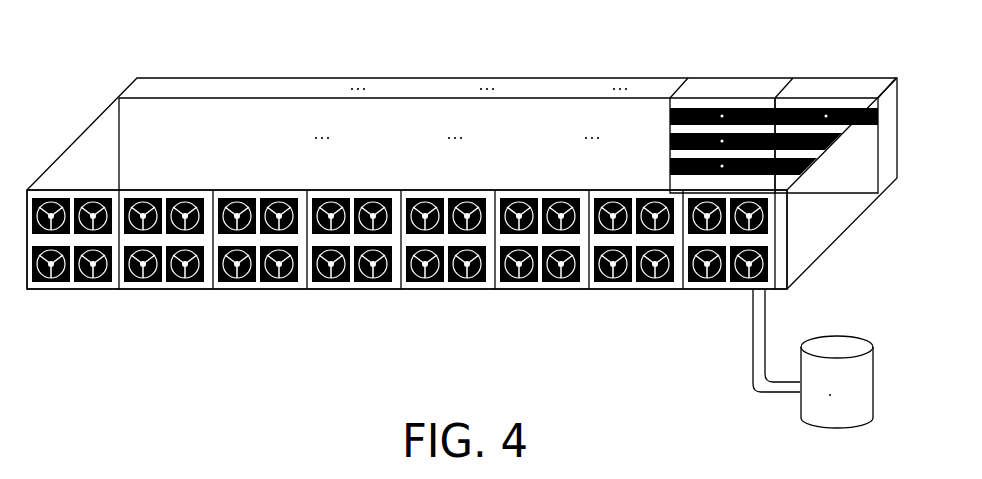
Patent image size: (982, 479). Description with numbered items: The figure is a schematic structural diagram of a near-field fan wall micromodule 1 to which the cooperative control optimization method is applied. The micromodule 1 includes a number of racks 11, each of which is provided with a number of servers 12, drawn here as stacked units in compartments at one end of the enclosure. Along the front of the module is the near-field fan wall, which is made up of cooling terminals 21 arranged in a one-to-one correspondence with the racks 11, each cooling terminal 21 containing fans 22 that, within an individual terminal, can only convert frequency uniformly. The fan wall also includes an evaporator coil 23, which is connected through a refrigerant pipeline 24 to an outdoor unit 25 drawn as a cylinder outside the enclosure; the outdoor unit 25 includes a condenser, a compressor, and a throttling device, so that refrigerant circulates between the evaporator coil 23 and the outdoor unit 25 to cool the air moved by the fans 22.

The near-field fan wall micromodule 1 is at (838, 240).
The rack 11 is at (758, 82).
The server 12 is at (827, 110).
The cooling terminal 21 is at (135, 343).
The fan 22 is at (460, 330).
The evaporator coil 23 is at (303, 291).
The refrigerant pipeline 24 is at (753, 340).
The outdoor unit 25 is at (850, 383).